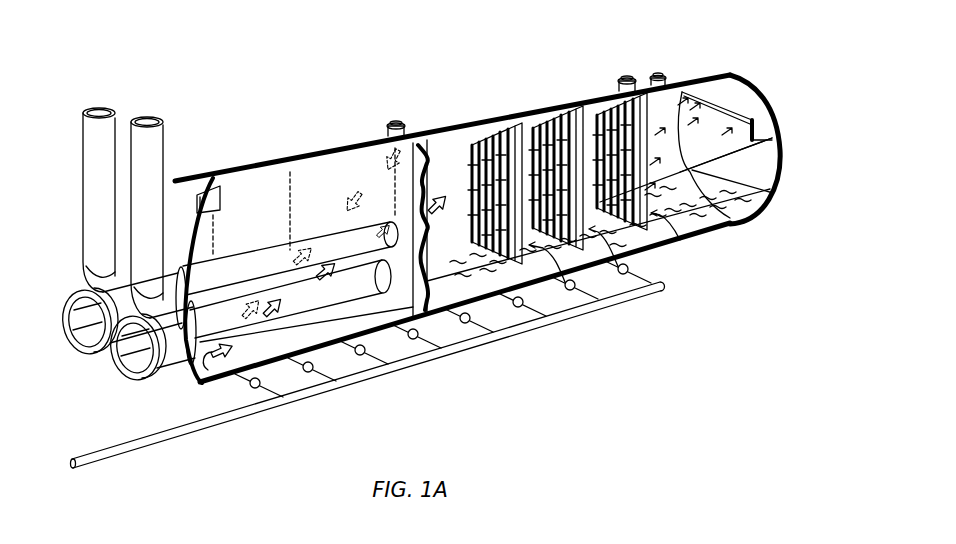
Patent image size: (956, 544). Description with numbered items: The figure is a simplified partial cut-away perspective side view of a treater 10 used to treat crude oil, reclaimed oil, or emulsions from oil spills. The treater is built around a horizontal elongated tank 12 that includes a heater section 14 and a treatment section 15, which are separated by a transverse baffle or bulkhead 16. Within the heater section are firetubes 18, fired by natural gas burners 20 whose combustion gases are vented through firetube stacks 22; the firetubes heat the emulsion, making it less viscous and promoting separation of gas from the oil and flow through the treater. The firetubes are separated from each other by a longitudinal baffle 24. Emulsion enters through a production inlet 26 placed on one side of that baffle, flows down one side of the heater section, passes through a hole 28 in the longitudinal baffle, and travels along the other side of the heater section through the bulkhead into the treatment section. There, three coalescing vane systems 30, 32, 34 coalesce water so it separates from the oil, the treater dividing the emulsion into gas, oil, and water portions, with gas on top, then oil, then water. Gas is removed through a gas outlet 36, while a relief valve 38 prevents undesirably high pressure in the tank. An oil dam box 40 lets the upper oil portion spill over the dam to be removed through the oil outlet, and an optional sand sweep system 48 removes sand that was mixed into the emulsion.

The treater 10 is at (294, 86).
The horizontal elongated tank 12 is at (463, 126).
The heater section 14 is at (275, 152).
The treatment section 15 is at (562, 72).
The transverse baffle or bulkhead 16 is at (436, 142).
The firetubes 18 is at (243, 257).
The natural gas burners 20 is at (168, 378).
The firetube stacks 22 is at (168, 155).
The longitudinal baffle 24 is at (318, 174).
The production inlet 26 is at (395, 120).
The hole in the longitudinal baffle 28 is at (210, 380).
The coalescing vane system 30 is at (607, 307).
The coalescing vane system 32 is at (657, 285).
The coalescing vane system 34 is at (687, 246).
The gas outlet 36 is at (627, 78).
The relief valve 38 is at (659, 74).
The oil dam box 40 is at (742, 110).
The sand sweep system 48 is at (490, 340).